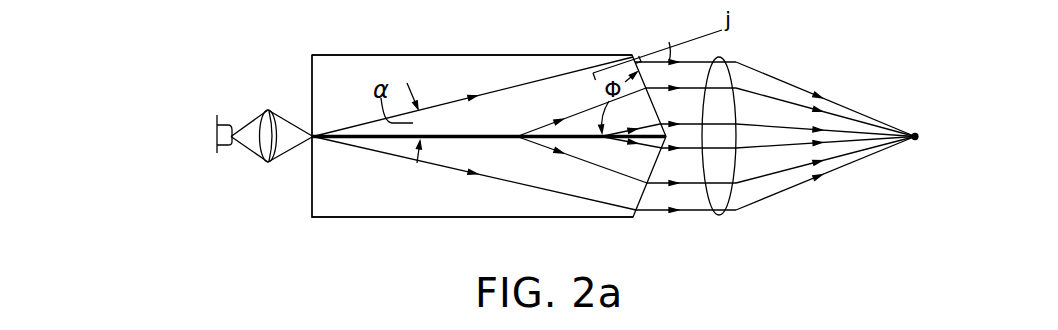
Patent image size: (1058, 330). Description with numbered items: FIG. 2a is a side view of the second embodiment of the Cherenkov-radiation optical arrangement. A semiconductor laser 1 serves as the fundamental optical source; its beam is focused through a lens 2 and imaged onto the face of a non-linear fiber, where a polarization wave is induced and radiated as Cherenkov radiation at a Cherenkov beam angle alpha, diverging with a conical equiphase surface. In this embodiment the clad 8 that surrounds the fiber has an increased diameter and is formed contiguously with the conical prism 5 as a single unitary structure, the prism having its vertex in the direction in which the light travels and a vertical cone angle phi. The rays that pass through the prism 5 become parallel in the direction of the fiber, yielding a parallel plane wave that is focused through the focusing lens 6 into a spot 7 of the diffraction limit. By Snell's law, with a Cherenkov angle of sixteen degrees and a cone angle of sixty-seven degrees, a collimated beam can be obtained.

The semiconductor laser 1 is at (218, 148).
The collimating lens 2 is at (273, 150).
The conical prism 5 is at (550, 218).
The focusing lens 6 is at (732, 192).
The spot 7 is at (910, 140).
The clad 8 is at (370, 192).